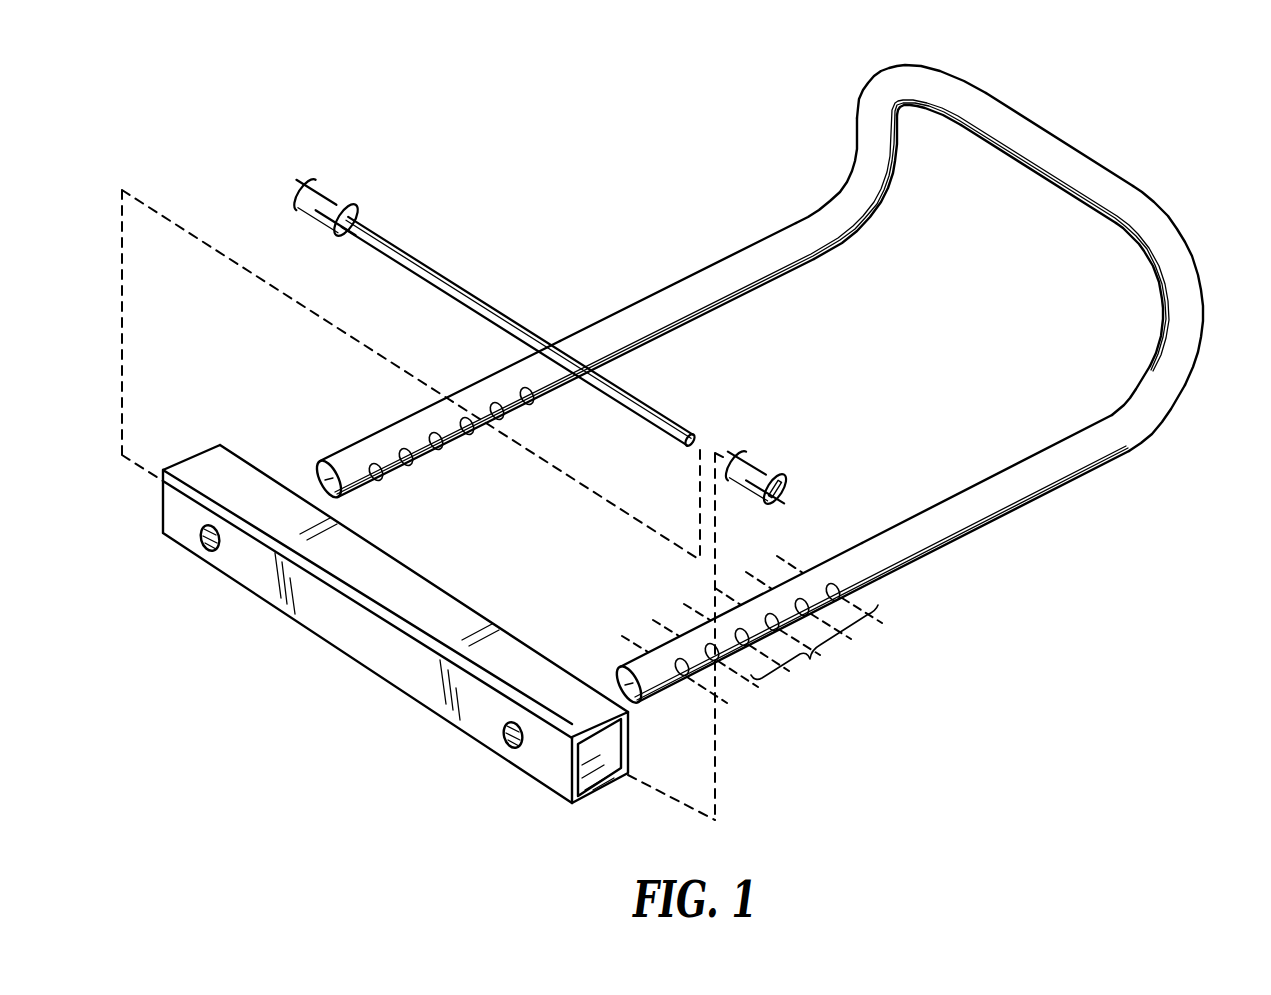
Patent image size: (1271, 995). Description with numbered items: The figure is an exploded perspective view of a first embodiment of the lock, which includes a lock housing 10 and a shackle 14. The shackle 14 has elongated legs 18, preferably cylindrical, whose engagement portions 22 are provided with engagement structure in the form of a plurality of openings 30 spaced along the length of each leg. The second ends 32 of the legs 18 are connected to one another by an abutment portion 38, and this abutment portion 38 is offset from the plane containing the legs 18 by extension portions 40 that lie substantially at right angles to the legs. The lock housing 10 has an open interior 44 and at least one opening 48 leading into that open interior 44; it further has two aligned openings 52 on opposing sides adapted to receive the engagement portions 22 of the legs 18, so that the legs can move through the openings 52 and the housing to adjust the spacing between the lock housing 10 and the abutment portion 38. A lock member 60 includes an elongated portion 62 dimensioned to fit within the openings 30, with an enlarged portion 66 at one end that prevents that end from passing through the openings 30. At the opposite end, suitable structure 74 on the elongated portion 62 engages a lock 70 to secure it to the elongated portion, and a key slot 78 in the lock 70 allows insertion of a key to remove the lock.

The lock housing 10 is at (424, 646).
The shackle 14 is at (1037, 514).
The elongated legs 18 is at (670, 300).
The engagement portions 22 is at (338, 460).
The openings 30 is at (385, 477).
The second ends 32 is at (811, 212).
The abutment portion 38 is at (1049, 140).
The extension portions 40 is at (850, 150).
The open interior 44 is at (600, 785).
The opening 48 is at (608, 741).
The openings 52 is at (207, 550).
The lock member 60 is at (517, 297).
The elongated portion 62 is at (430, 270).
The enlarged portion 66 is at (318, 186).
The lock 70 is at (783, 465).
The structure 74 is at (694, 432).
The key slot 78 is at (790, 494).